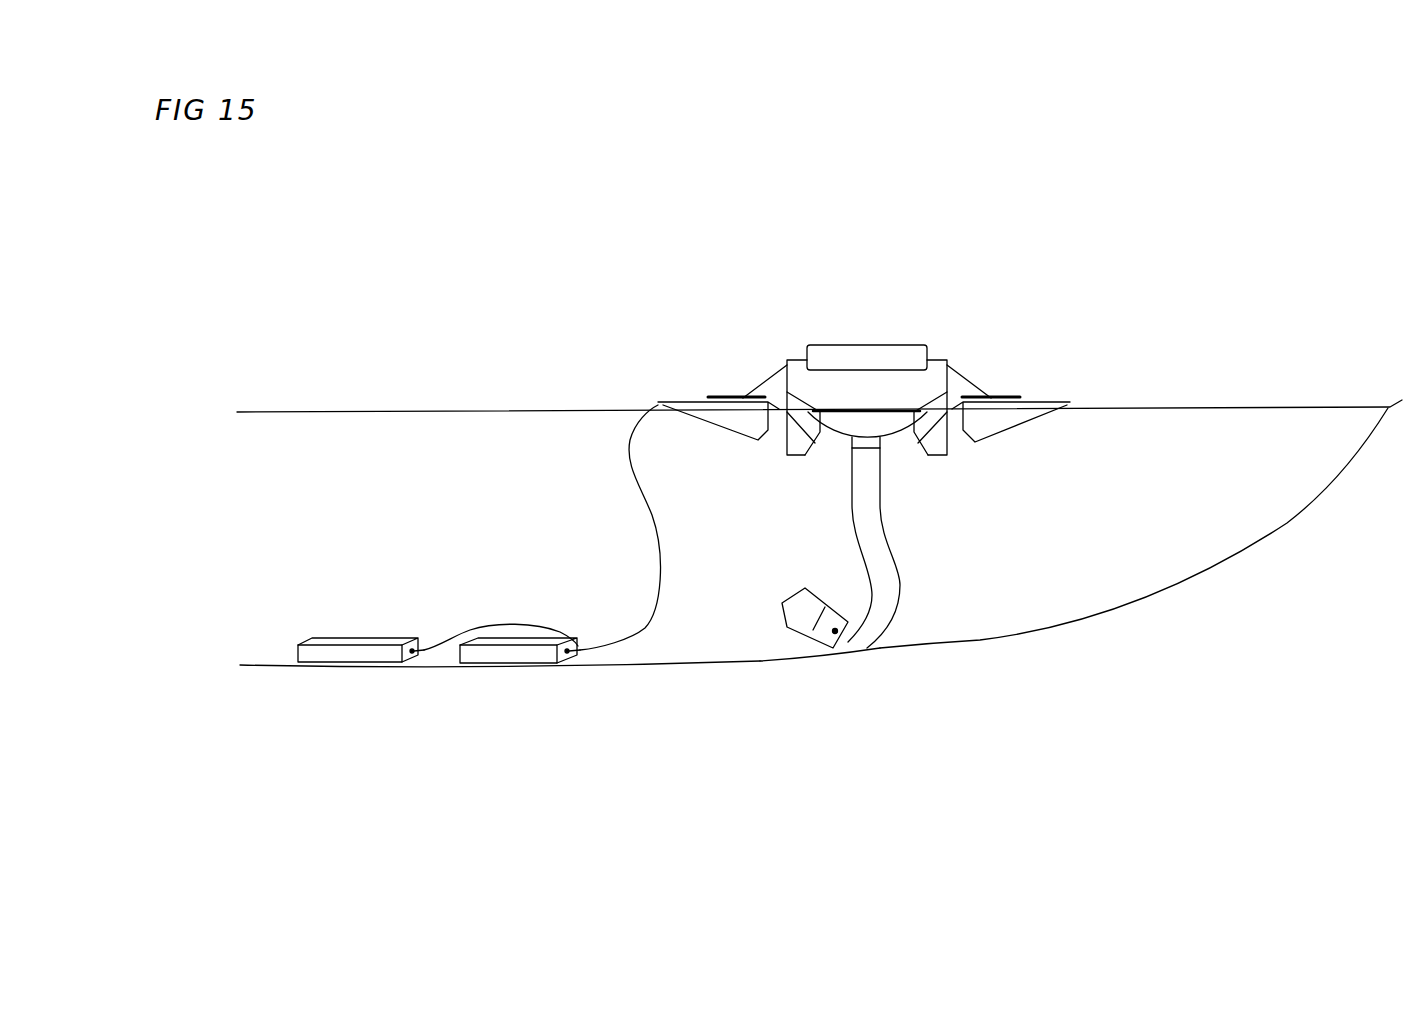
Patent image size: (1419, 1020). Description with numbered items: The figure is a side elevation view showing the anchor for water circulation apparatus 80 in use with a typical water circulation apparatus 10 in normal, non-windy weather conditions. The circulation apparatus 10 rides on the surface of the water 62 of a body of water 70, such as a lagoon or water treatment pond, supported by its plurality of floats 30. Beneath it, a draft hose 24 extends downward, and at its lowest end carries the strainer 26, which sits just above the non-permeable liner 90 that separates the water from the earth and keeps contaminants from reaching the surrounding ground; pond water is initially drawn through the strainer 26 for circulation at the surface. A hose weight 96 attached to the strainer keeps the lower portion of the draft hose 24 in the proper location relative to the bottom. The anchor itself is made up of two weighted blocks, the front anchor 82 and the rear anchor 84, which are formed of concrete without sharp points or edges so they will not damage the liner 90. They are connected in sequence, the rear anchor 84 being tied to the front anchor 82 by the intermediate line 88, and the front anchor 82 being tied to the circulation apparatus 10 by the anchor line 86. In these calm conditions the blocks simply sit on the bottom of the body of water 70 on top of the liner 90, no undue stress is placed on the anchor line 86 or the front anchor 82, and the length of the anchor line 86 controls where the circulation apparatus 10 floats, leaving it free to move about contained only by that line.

The water circulation apparatus 10 is at (860, 318).
The draft hose 24 is at (883, 508).
The strainer 26 is at (795, 597).
The floats 30 is at (708, 398).
The surface of the water 62 is at (365, 410).
The body of water 70 is at (480, 468).
The anchor for water circulation apparatus 80 is at (416, 639).
The front anchor 82 is at (513, 663).
The rear anchor 84 is at (347, 658).
The anchor line 86 is at (643, 635).
The intermediate line 88 is at (485, 628).
The non-permeable liner 90 is at (836, 655).
The hose weight 96 is at (838, 634).